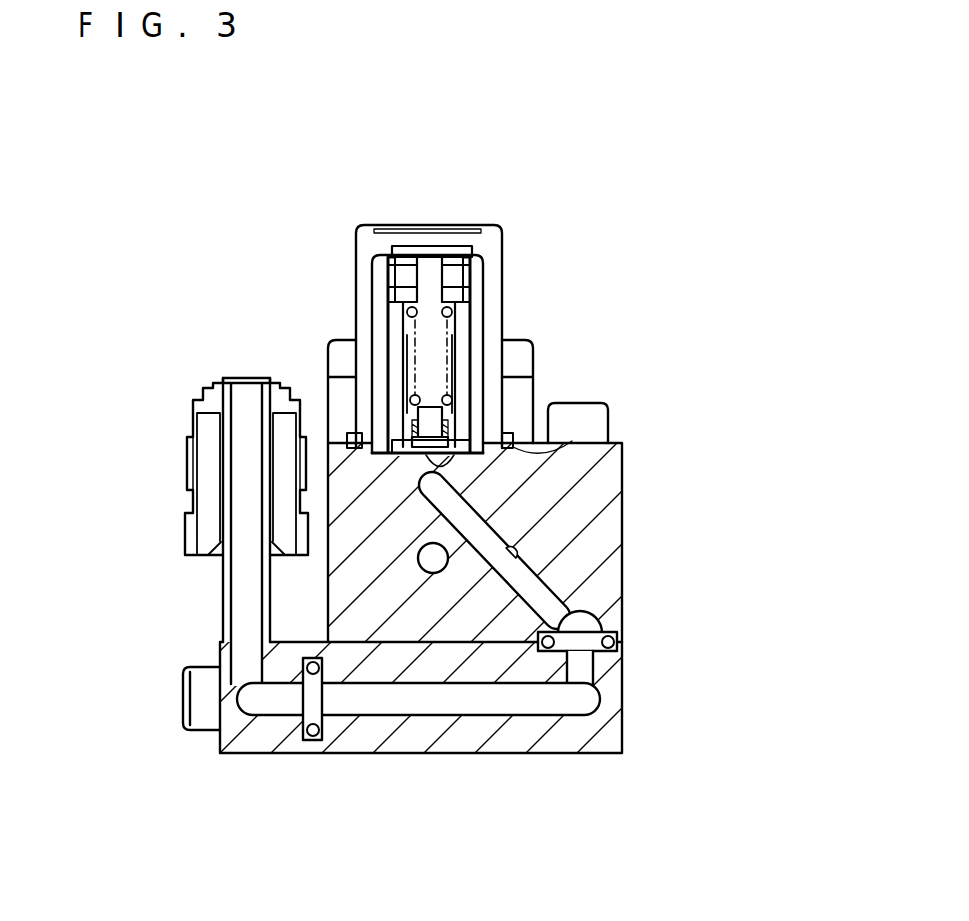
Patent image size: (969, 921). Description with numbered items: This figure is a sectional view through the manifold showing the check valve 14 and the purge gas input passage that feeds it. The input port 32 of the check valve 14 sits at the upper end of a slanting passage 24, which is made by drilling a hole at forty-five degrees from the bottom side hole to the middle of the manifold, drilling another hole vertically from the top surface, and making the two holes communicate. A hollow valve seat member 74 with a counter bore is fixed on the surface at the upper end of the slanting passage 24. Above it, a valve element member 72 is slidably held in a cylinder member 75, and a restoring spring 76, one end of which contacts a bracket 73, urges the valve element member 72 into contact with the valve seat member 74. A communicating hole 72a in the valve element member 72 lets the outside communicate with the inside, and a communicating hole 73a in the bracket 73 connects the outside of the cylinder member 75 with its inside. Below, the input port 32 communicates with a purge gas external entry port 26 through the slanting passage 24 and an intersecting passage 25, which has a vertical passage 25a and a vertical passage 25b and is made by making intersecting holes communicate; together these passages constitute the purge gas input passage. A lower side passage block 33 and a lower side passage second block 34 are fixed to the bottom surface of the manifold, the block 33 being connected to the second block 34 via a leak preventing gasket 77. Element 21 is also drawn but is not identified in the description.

The check valve 14 is at (482, 256).
The passage 21 is at (428, 563).
The slanting passage 24 is at (515, 556).
The intersecting passage 25 is at (498, 714).
The vertical passage 25a is at (600, 666).
The vertical passage 25b is at (245, 574).
The purge gas external entry port 26 is at (230, 378).
The input port 32 is at (445, 482).
The lower side passage block 33 is at (604, 752).
The lower side passage second block 34 is at (243, 740).
The valve element member 72 is at (443, 437).
The communicating hole 72a is at (410, 422).
The bracket 73 is at (407, 252).
The communicating hole 73a is at (395, 268).
The valve seat member 74 is at (572, 442).
The cylinder member 75 is at (503, 233).
The restoring spring 76 is at (396, 308).
The leak preventing gasket 77 is at (312, 743).